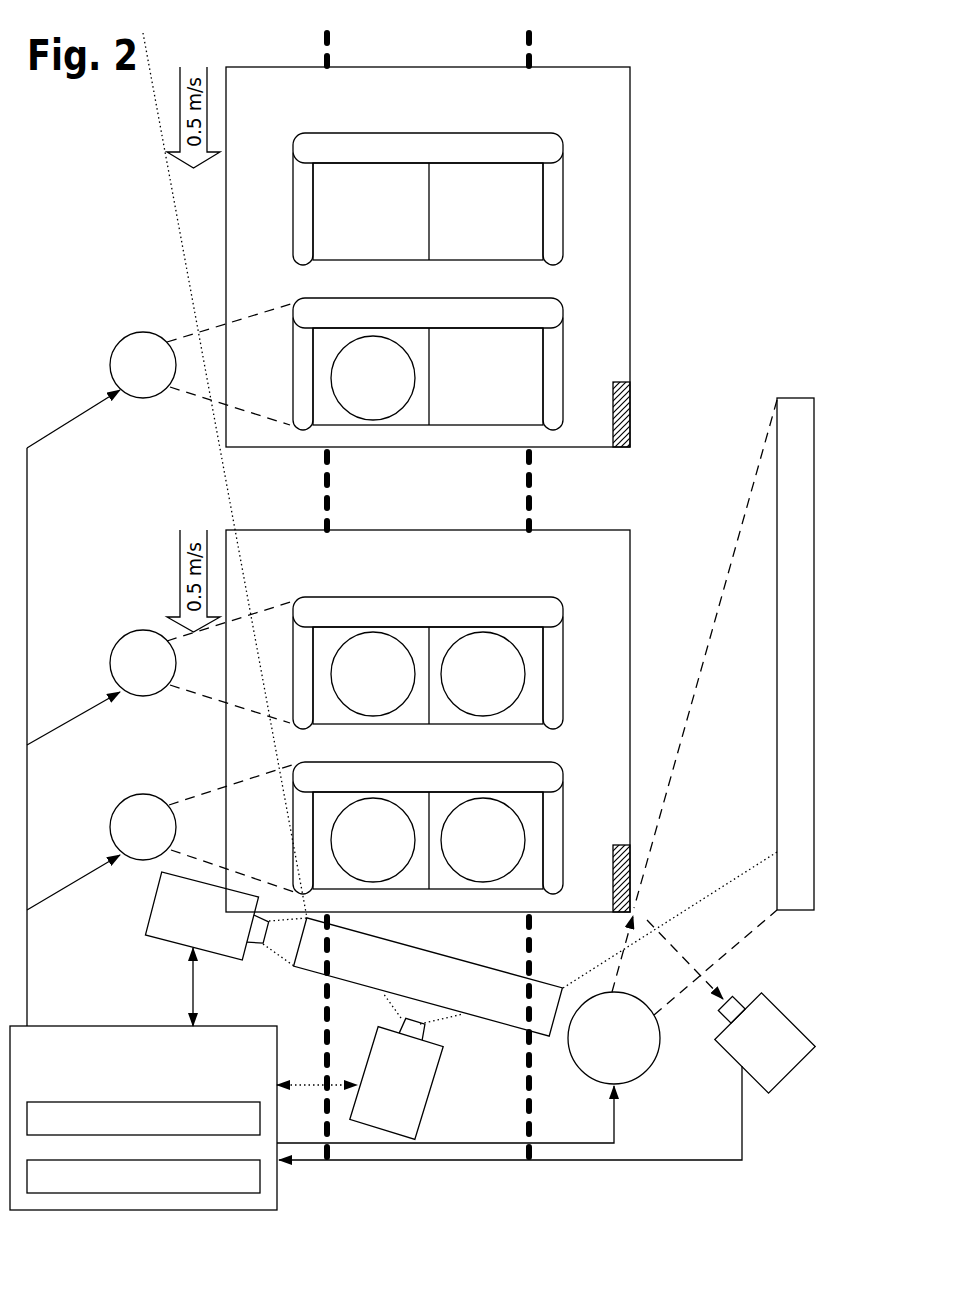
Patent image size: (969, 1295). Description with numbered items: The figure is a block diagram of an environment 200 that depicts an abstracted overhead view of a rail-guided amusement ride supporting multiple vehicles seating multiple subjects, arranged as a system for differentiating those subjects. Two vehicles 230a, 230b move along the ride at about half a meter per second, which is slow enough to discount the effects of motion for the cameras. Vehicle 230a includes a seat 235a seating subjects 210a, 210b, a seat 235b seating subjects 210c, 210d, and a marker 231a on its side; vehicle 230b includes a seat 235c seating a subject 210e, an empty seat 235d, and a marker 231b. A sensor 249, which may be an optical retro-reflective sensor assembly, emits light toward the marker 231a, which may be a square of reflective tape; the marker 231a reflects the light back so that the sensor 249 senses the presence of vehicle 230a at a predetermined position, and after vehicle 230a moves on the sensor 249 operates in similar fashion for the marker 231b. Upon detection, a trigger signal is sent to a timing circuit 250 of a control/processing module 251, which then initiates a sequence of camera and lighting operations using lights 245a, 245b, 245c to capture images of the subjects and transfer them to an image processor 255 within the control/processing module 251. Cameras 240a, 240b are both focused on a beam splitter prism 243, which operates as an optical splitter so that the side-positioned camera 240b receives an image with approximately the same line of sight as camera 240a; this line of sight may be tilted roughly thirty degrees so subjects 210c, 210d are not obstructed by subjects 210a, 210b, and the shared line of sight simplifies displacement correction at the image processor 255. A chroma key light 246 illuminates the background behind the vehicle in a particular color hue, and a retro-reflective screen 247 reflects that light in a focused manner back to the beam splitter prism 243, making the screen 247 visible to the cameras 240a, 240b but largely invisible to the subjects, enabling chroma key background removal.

The environment 200 is at (752, 97).
The vehicle 230a is at (428, 721).
The vehicle 230b is at (428, 257).
The seat 235a is at (428, 828).
The seat 235b is at (428, 663).
The seat 235c is at (428, 364).
The seat 235d is at (428, 199).
The subject 210a is at (373, 840).
The subject 210b is at (483, 840).
The subject 210c is at (373, 674).
The subject 210d is at (483, 674).
The subject 210e is at (373, 378).
The marker 231a is at (623, 912).
The marker 231b is at (623, 448).
The light 245a is at (161, 837).
The light 245b is at (162, 672).
The light 245c is at (162, 375).
The camera 240a is at (370, 1066).
The camera 240b is at (226, 949).
The beam splitter prism 243 is at (535, 944).
The chroma key light 246 is at (527, 1026).
The retro-reflective screen 247 is at (724, 654).
The sensor 249 is at (547, 1040).
The control/processing module 251 is at (143, 1118).
The image processor 255 is at (143, 1118).
The timing circuit 250 is at (143, 1176).